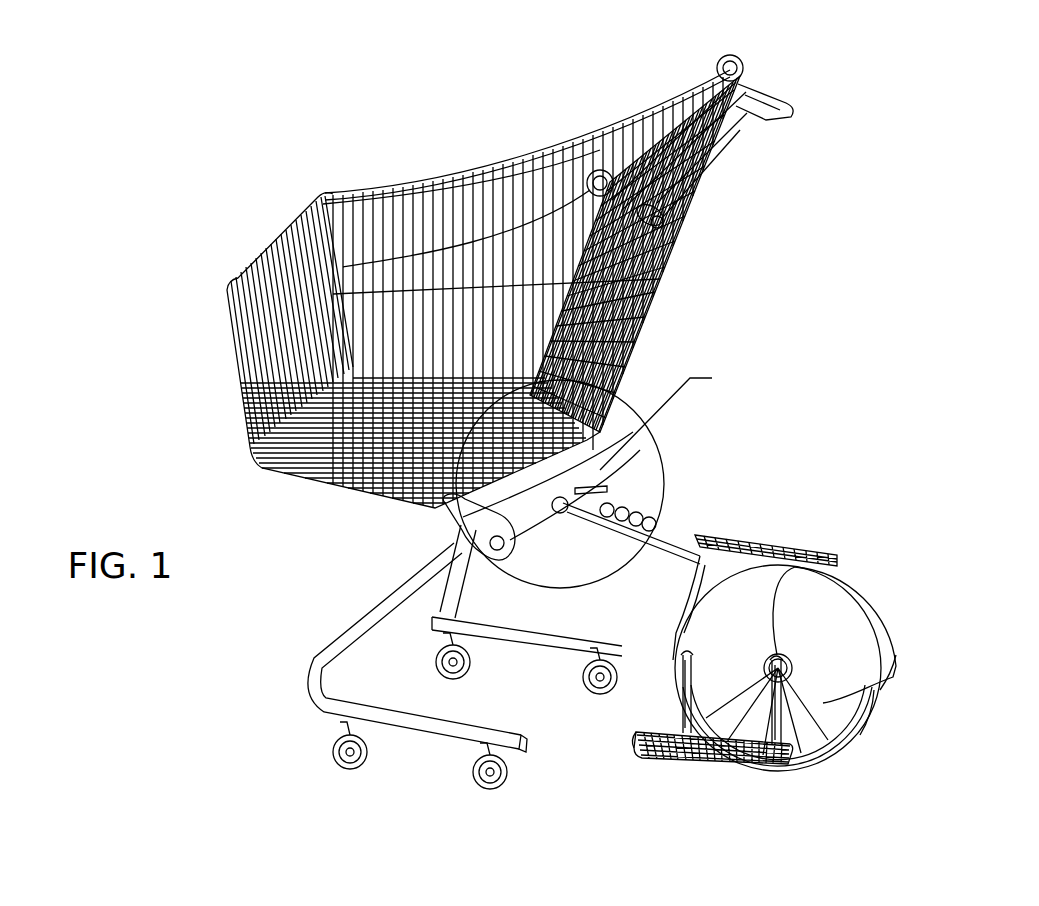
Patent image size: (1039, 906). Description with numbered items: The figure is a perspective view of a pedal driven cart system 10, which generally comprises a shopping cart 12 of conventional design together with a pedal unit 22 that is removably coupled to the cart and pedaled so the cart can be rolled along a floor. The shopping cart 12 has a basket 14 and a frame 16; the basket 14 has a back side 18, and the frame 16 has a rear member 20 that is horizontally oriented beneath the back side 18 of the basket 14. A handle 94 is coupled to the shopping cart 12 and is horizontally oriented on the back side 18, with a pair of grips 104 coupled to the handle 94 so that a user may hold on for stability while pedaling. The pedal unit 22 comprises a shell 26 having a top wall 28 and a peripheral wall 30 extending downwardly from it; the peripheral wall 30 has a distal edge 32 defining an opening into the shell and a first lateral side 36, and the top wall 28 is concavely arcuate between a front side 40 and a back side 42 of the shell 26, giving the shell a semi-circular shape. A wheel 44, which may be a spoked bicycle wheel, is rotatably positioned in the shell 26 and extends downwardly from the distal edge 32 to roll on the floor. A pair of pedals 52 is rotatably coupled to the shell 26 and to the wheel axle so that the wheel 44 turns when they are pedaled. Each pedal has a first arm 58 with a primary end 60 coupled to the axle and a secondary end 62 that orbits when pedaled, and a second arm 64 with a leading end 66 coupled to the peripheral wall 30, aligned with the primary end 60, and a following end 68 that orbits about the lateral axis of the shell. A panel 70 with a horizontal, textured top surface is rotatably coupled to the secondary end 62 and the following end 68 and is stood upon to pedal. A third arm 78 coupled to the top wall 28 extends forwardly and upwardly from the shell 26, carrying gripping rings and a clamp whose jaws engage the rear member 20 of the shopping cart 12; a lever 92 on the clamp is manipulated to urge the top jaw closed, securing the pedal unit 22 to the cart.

The pedal driven cart system 10 is at (832, 101).
The shopping cart 12 is at (585, 135).
The basket 14 is at (470, 167).
The frame 16 is at (633, 437).
The back side 18 is at (667, 277).
The rear member 20 is at (633, 447).
The pedal unit 22 is at (885, 586).
The shell 26 is at (890, 628).
The top wall 28 is at (823, 577).
The peripheral wall 30 is at (560, 590).
The distal edge 32 is at (822, 757).
The first lateral side 36 is at (770, 765).
The front side 40 is at (885, 683).
The back side 42 is at (893, 655).
The wheel 44 is at (683, 690).
The pedals 52 is at (758, 536).
The first arm 58 is at (780, 657).
The primary end 60 is at (790, 567).
The secondary end 62 is at (790, 752).
The second arm 64 is at (645, 743).
The leading end 66 is at (683, 655).
The following end 68 is at (695, 762).
The panel 70 is at (648, 756).
The third arm 78 is at (560, 510).
The lever 92 is at (622, 430).
The handle 94 is at (724, 133).
The grips 104 is at (777, 105).